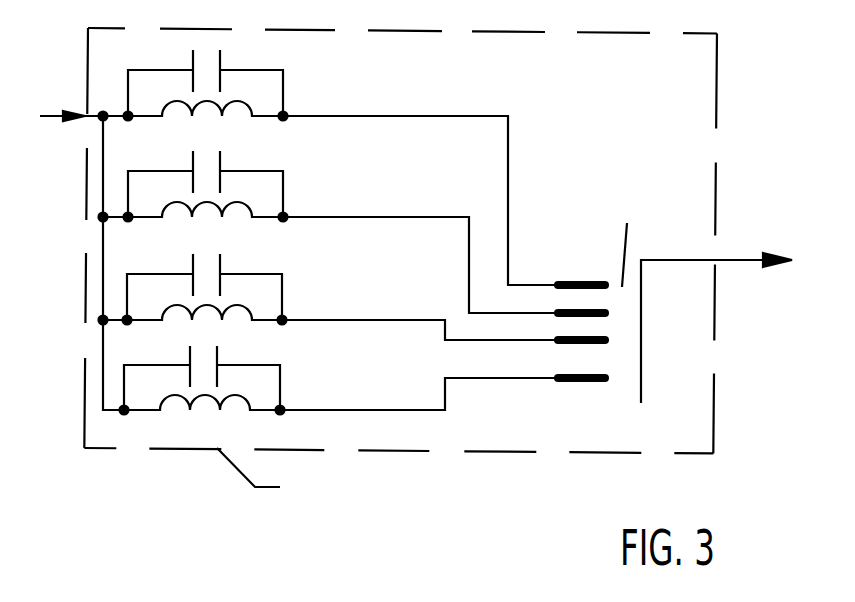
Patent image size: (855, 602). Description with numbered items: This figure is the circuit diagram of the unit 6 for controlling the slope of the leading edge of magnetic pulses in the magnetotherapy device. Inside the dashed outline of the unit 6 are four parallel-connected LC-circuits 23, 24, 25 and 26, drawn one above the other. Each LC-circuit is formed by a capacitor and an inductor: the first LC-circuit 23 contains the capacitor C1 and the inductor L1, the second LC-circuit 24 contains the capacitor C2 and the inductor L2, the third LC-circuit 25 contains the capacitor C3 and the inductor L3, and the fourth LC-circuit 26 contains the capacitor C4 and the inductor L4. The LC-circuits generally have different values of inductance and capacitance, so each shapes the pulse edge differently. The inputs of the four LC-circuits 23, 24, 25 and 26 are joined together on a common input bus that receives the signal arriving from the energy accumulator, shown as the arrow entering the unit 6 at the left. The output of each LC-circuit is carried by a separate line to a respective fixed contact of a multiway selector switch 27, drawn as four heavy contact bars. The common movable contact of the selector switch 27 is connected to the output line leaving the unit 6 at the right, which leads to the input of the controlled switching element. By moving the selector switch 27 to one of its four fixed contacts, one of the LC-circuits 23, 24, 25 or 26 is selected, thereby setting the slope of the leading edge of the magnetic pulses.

The unit for controlling the slope of the leading edge of magnetic pulses 6 is at (87, 62).
The LC-circuit 23 is at (444, 186).
The LC-circuit 24 is at (444, 250).
The LC-circuit 25 is at (443, 314).
The LC-circuit 26 is at (442, 394).
The multiway selector switch 27 is at (627, 223).
The capacitor C1 is at (193, 77).
The capacitor C2 is at (193, 178).
The capacitor C3 is at (193, 281).
The capacitor C4 is at (190, 372).
The inductor L1 is at (219, 78).
The inductor L2 is at (219, 179).
The inductor L3 is at (219, 282).
The inductor L4 is at (216, 372).